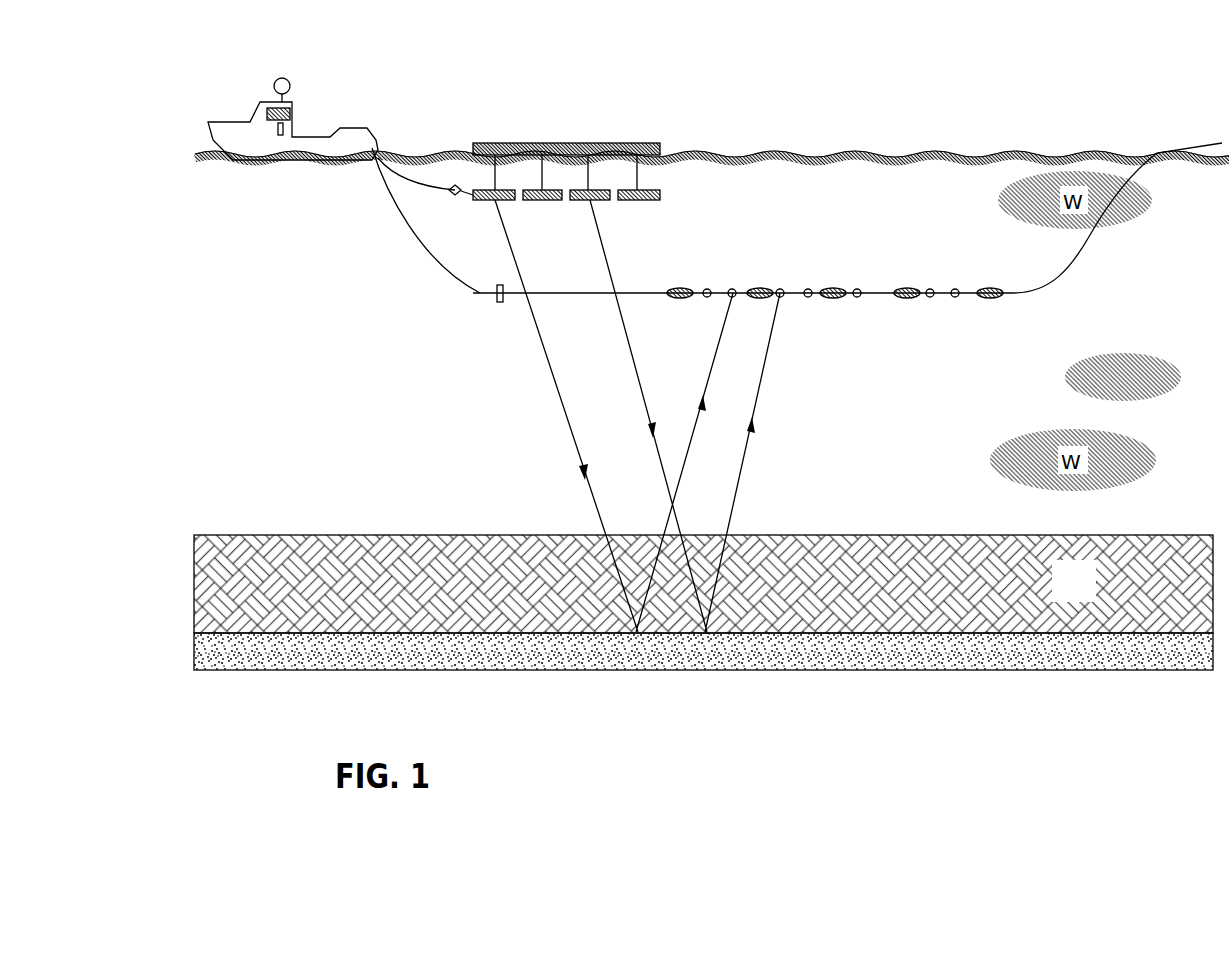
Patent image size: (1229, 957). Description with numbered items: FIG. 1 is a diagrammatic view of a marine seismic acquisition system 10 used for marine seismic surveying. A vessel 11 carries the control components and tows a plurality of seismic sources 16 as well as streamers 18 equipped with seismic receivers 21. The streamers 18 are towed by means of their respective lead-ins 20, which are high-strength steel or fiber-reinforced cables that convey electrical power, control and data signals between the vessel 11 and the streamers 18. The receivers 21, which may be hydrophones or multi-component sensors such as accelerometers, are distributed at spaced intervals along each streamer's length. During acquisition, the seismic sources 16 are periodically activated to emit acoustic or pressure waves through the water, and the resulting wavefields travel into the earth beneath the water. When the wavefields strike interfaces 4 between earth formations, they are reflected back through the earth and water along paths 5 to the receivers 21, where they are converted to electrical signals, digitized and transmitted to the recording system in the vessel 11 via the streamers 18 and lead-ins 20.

The marine seismic acquisition system 10 is at (714, 94).
The vessel 11 is at (219, 120).
The lead-ins 20 is at (420, 250).
The seismic sources 16 is at (597, 200).
The streamers 18 is at (722, 290).
The seismic receivers 21 is at (710, 290).
The paths 5 is at (702, 423).
The interfaces 4 is at (972, 570).